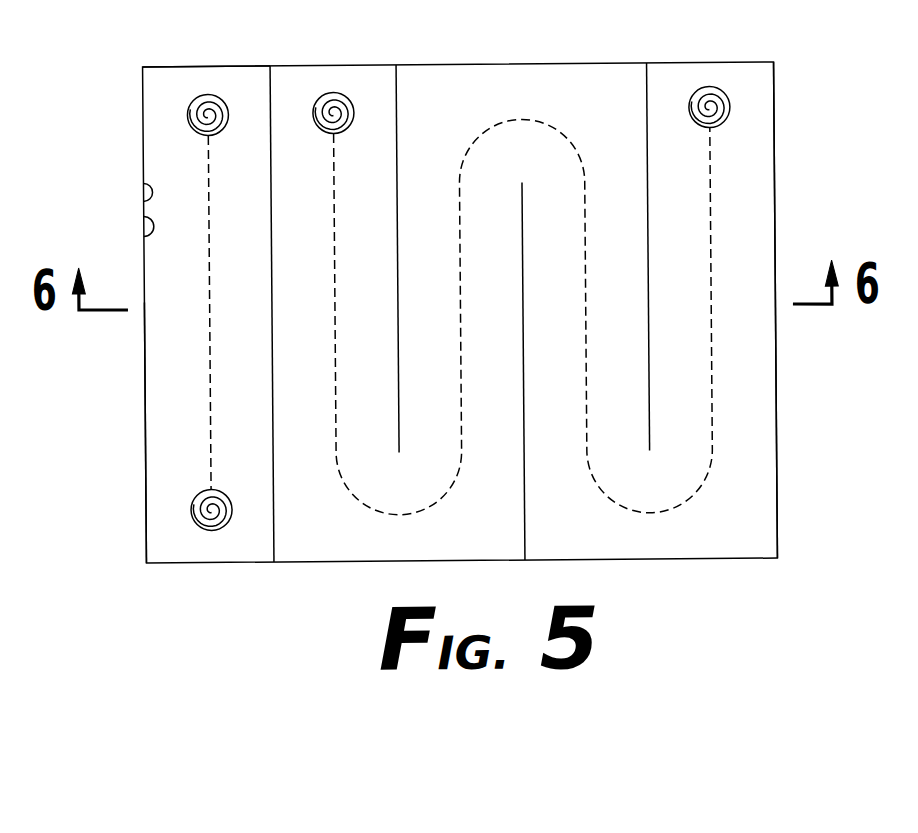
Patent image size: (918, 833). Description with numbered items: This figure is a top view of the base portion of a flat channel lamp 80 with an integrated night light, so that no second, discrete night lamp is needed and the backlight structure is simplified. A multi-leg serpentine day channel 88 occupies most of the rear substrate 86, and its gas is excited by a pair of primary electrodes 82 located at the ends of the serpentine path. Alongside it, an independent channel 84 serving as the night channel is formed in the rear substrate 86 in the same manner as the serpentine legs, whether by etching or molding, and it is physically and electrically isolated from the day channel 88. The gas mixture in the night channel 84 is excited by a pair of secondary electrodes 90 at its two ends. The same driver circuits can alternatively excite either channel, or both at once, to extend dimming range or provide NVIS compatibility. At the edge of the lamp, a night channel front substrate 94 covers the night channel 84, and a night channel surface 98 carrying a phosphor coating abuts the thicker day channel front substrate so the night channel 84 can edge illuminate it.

The flat channel lamp 80 is at (786, 434).
The primary electrodes 82 is at (336, 87).
The independent channel 84 is at (163, 118).
The rear substrate 86 is at (144, 442).
The serpentine day channel 88 is at (759, 191).
The secondary electrodes 90 is at (206, 91).
The night channel front substrate 94 is at (144, 181).
The night channel surface 98 is at (144, 234).